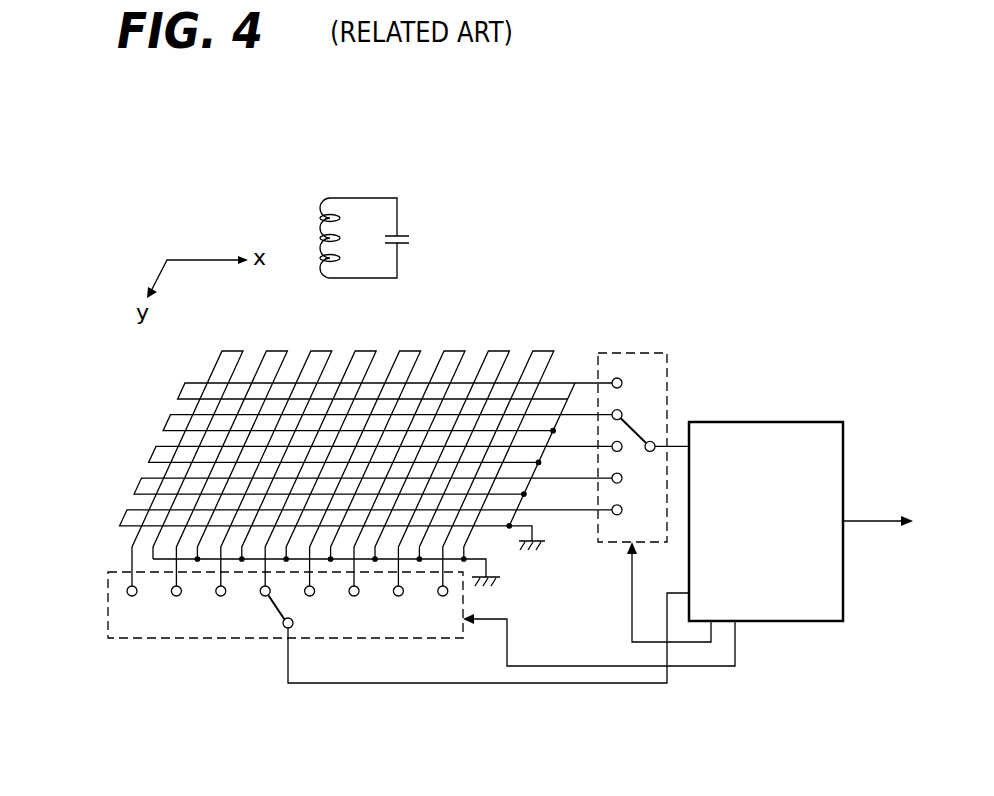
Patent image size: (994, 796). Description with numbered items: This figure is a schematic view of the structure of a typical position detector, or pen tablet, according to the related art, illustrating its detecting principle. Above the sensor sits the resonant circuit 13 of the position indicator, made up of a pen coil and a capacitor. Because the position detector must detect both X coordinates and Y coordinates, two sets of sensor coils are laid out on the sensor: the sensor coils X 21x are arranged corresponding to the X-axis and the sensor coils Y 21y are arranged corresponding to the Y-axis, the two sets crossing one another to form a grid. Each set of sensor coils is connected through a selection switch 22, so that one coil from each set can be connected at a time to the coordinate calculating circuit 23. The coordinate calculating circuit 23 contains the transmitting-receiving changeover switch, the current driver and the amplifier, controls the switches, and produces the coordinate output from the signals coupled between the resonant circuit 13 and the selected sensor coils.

The resonant circuit 13 is at (313, 185).
The sensor coils X 21x is at (565, 338).
The sensor coils Y 21y is at (113, 370).
The selection switch 22 is at (632, 352).
The coordinate calculating circuit 23 is at (764, 421).